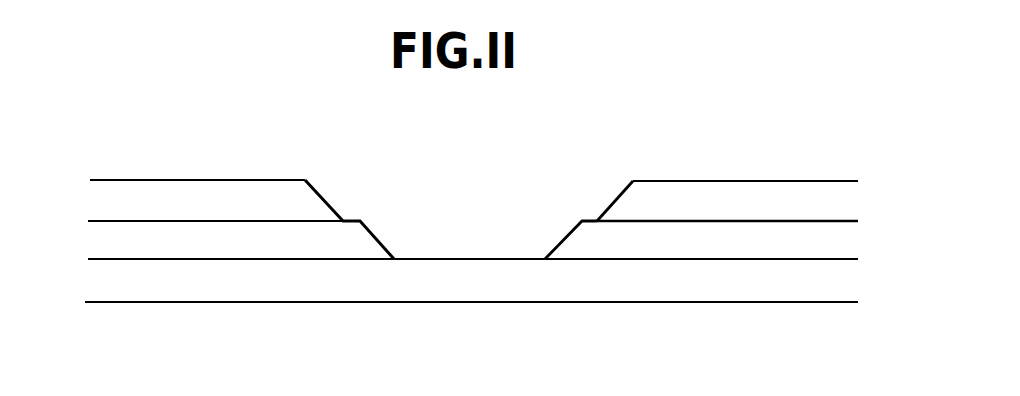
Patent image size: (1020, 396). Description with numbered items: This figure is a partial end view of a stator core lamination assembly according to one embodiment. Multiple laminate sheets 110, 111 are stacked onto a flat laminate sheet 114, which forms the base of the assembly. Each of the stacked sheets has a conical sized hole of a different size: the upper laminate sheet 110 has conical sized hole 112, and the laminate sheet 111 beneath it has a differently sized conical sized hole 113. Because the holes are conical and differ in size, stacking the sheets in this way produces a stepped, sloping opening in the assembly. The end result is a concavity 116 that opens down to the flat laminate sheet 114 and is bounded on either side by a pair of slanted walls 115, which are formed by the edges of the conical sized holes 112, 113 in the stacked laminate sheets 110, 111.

The laminate sheet 110 is at (852, 200).
The laminate sheet 111 is at (838, 243).
The conical sized hole 112 is at (608, 192).
The conical sized hole 113 is at (552, 242).
The flat laminate sheet 114 is at (847, 285).
The slanted walls 115 is at (325, 198).
The concavity 116 is at (506, 236).